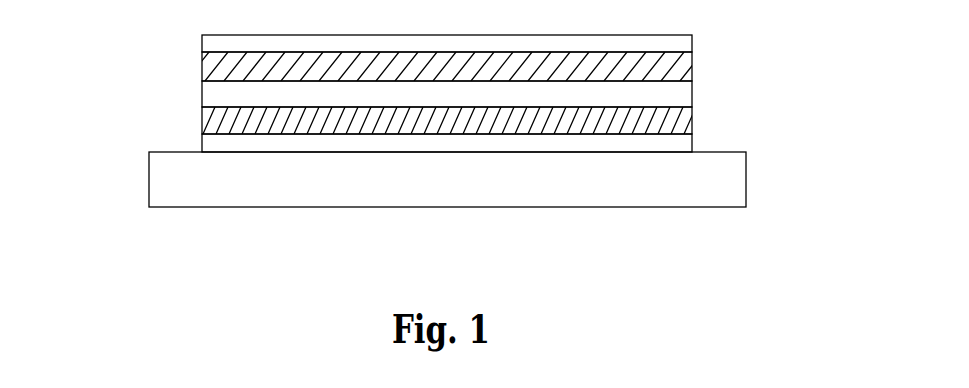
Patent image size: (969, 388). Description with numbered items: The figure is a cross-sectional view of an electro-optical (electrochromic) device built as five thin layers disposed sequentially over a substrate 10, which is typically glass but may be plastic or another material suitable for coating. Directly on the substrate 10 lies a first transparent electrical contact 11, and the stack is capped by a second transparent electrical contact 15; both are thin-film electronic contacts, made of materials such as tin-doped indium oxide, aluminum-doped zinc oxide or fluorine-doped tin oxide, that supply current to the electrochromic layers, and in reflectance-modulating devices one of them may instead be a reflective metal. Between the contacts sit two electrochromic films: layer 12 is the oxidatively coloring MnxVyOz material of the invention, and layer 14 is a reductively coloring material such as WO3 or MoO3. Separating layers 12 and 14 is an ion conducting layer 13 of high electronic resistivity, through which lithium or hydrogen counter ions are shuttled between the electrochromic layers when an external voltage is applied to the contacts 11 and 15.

The substrate 10 is at (827, 217).
The transparent electrical contact 11 is at (820, 135).
The oxidatively coloring electrochromic layer 12 is at (208, 71).
The ion conducting layer 13 is at (220, 98).
The reductively coloring electrochromic layer 14 is at (208, 124).
The transparent electrical contact 15 is at (808, 28).